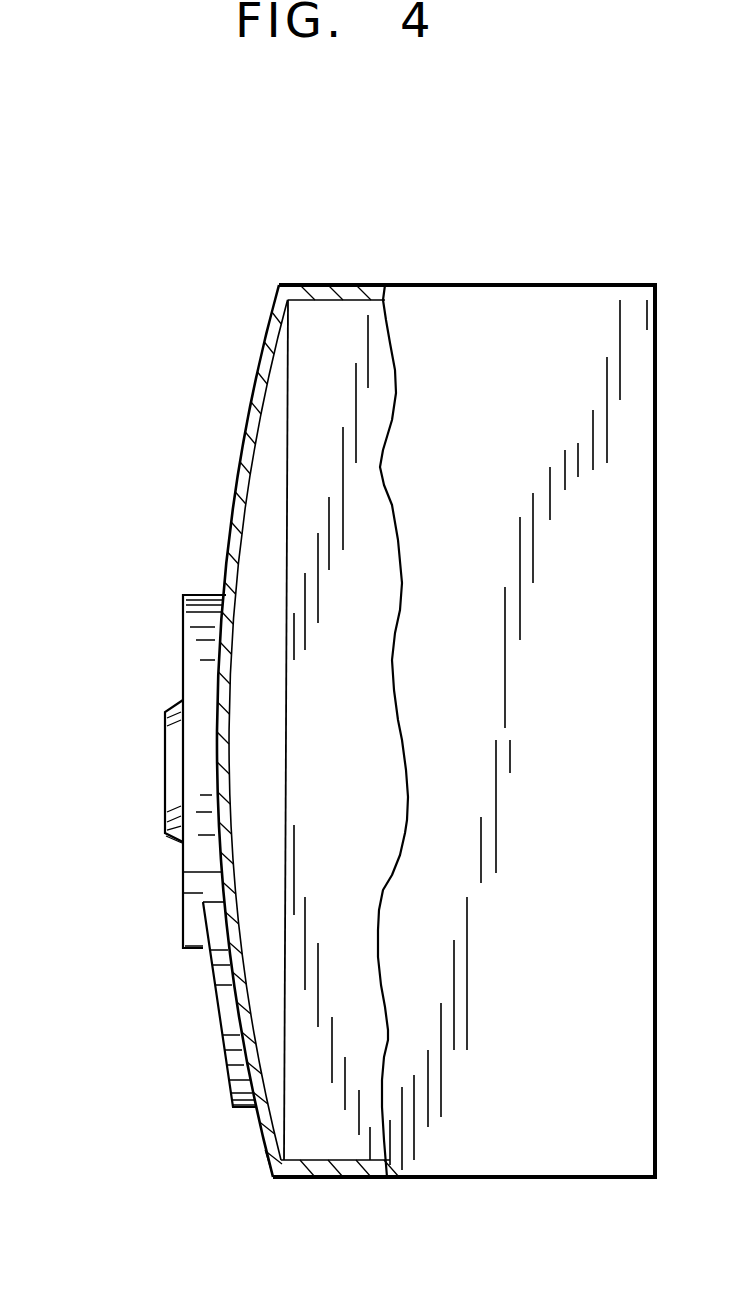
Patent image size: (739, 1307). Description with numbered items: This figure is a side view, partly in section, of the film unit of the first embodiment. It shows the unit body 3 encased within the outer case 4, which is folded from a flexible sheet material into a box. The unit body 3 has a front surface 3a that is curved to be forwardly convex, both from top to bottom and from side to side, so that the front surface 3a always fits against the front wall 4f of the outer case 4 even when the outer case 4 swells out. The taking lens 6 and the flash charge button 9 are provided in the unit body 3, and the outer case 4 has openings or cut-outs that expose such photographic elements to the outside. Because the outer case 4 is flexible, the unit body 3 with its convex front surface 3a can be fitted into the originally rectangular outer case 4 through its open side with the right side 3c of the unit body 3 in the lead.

The outer case 4 is at (521, 285).
The front wall of the outer case 4f is at (248, 452).
The unit body 3 is at (323, 1135).
The front surface 3a is at (255, 572).
The right side of the unit body 3c is at (303, 1115).
The taking lens 6 is at (176, 775).
The flash charge button 9 is at (220, 1005).